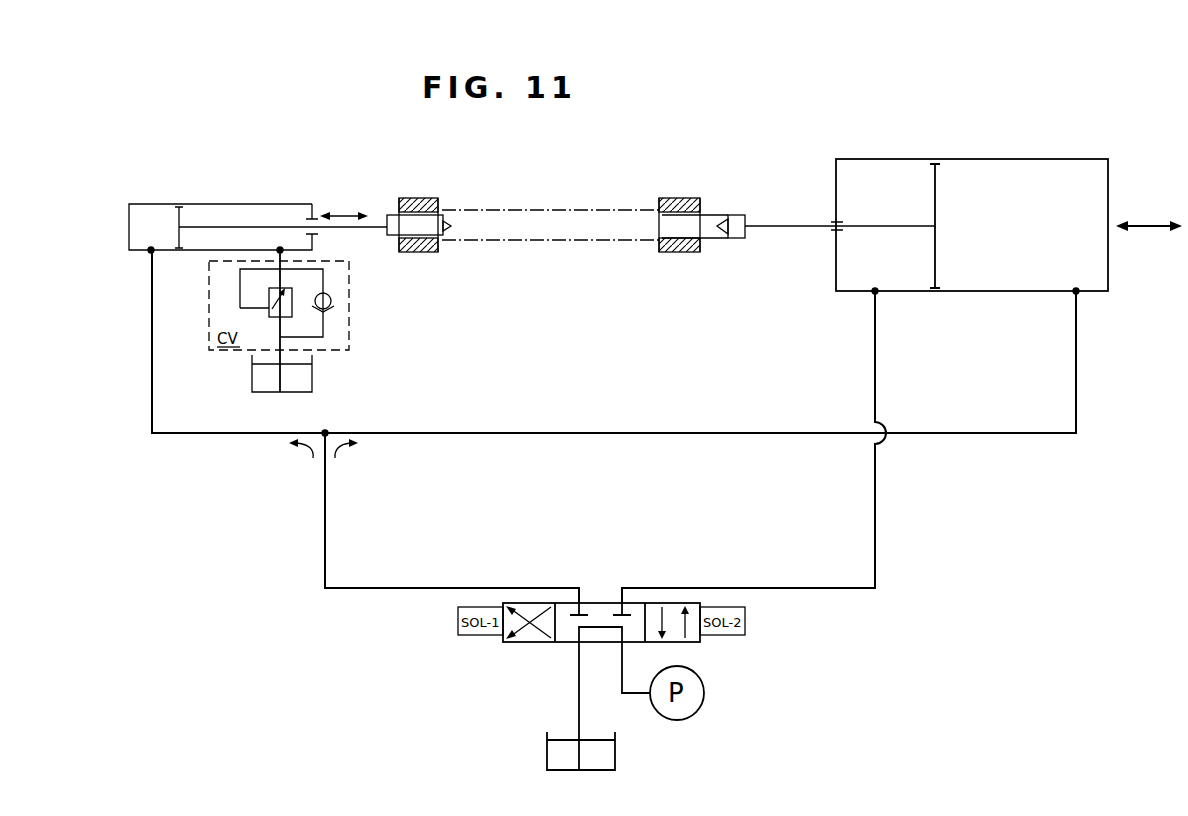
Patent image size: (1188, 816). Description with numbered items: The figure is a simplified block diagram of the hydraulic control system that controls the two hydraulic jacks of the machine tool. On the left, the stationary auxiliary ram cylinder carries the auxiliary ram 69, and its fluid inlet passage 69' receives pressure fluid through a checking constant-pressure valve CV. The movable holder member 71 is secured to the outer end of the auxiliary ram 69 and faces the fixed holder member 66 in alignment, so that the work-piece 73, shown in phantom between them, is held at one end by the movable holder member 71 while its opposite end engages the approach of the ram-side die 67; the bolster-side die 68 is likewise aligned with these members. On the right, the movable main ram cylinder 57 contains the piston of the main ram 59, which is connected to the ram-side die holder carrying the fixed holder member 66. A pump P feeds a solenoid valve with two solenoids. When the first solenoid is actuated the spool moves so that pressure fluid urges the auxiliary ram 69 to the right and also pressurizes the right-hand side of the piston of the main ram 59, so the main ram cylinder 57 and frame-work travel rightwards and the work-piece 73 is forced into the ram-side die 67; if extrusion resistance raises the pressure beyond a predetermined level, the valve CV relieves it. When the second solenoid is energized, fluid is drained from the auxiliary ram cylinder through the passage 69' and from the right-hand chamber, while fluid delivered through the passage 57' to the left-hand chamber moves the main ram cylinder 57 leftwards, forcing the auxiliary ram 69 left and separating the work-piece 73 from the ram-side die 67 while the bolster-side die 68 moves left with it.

The auxiliary ram 69 is at (258, 190).
The fluid inlet passage 69' is at (119, 280).
The bolster-side die 68 is at (418, 198).
The movable holder member 71 is at (452, 215).
The work-piece 73 is at (532, 210).
The ram-side die 67 is at (678, 198).
The fixed holder member 66 is at (741, 215).
The main ram 59 is at (877, 226).
The main ram cylinder 57 is at (1006, 187).
The fluid passage 57' is at (846, 322).